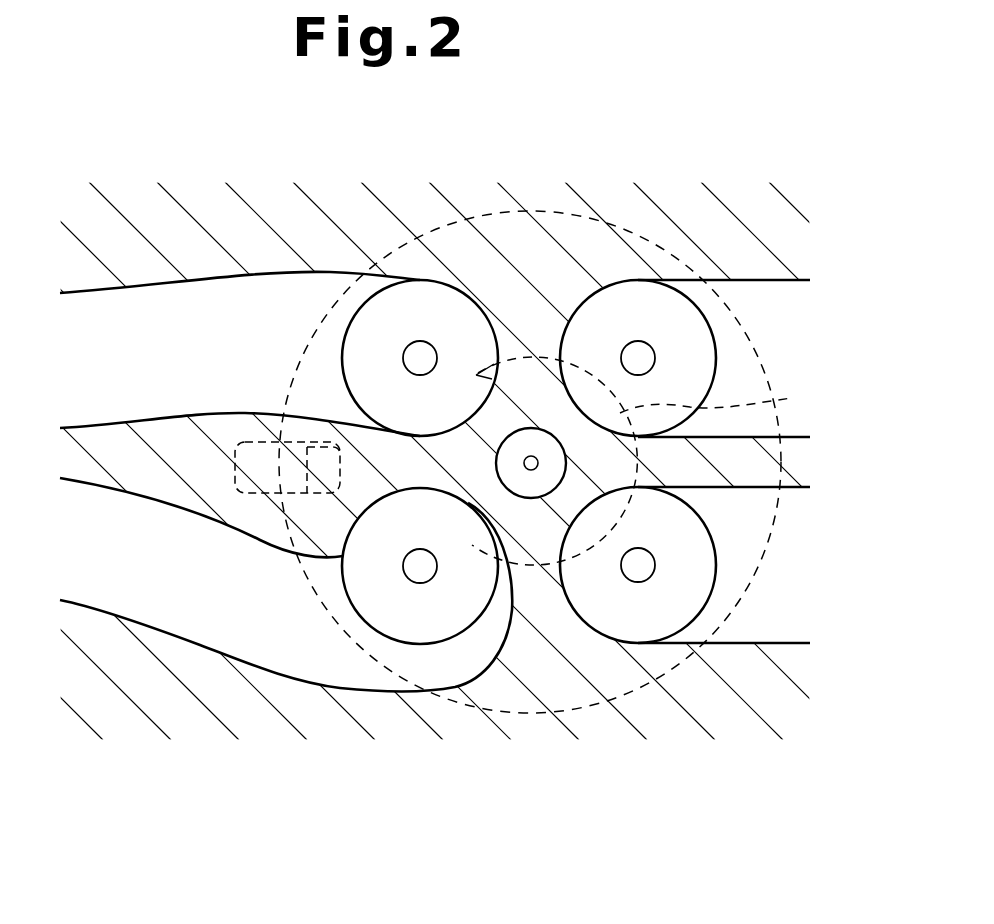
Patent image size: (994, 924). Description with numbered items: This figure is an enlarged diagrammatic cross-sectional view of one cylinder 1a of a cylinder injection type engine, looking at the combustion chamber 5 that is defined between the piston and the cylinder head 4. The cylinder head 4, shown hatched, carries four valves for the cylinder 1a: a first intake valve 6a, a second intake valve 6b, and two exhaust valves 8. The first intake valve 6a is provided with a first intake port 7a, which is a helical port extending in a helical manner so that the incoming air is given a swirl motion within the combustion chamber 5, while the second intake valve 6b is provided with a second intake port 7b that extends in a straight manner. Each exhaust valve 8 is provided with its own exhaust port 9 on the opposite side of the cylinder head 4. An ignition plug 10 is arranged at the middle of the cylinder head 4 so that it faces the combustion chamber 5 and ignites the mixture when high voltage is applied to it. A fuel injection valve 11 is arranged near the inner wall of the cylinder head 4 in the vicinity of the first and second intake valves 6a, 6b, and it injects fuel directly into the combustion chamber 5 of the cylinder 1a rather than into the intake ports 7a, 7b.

The cylinder 1a is at (590, 706).
The cylinder head 4 is at (754, 206).
The combustion chamber 5 is at (536, 210).
The first intake valve 6a is at (435, 618).
The second intake valve 6b is at (443, 300).
The first intake port 7a is at (230, 657).
The second intake port 7b is at (218, 298).
The exhaust valve 8 is at (628, 297).
The exhaust port 9 is at (765, 294).
The ignition plug 10 is at (548, 426).
The fuel injection valve 11 is at (242, 415).